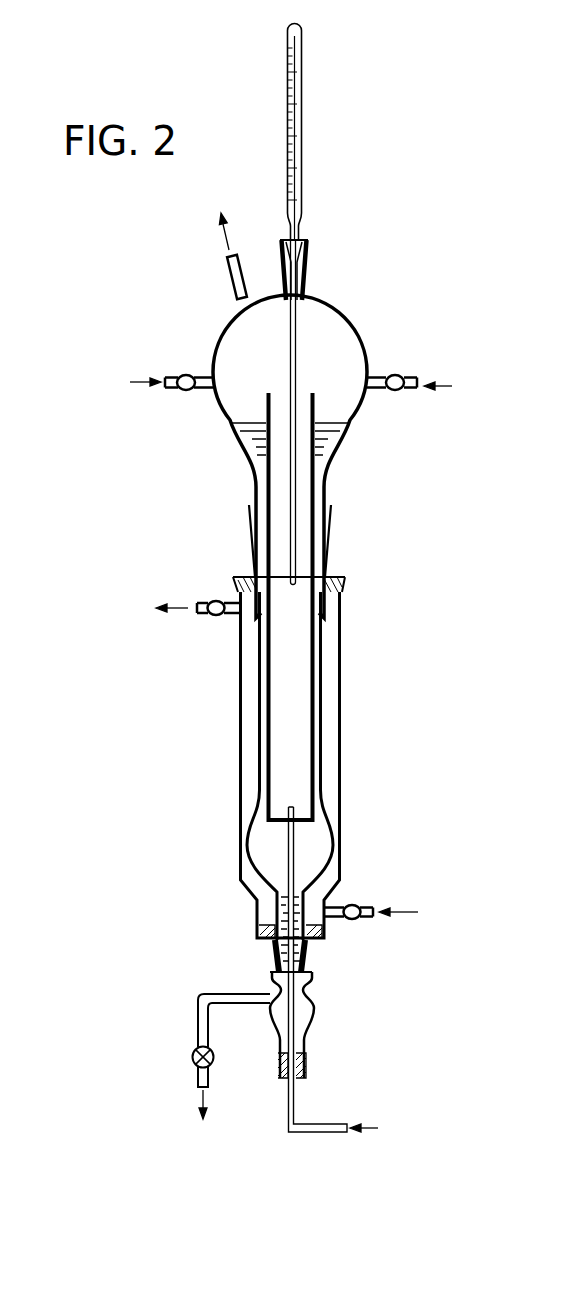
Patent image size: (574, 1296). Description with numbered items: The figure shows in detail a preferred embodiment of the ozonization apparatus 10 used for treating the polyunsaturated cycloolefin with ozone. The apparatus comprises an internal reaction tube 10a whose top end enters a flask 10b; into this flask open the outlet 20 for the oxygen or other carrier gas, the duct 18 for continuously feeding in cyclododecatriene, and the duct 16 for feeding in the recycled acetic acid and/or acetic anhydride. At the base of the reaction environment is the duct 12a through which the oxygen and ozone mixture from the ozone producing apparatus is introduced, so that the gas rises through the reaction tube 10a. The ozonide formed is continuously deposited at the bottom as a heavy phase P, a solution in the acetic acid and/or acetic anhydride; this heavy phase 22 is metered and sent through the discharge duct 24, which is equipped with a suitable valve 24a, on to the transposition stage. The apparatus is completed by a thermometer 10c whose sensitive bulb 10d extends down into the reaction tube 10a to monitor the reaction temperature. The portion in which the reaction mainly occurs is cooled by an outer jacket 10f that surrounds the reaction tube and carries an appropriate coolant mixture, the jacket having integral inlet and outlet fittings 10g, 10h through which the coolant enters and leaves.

The ozonization apparatus 10 is at (361, 306).
The internal reaction tube 10a is at (313, 697).
The flask 10b is at (363, 347).
The thermometer 10c is at (302, 165).
The sensitive bulb 10d is at (292, 555).
The outer jacket 10f is at (238, 745).
The inlet fitting 10g is at (357, 903).
The outlet fitting 10h is at (214, 619).
The duct 12a is at (293, 1102).
The duct for feeding recycled acetic acid and/or anhydride 16 is at (398, 393).
The duct for feeding cyclododecatriene 18 is at (182, 392).
The outlet for the oxygen 20 is at (230, 273).
The heavy phase 22 is at (317, 842).
The discharge duct 24 is at (197, 1077).
The valve 24a is at (192, 1050).
The heavy phase P is at (307, 950).